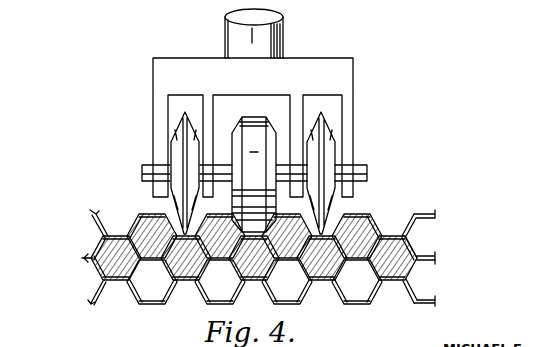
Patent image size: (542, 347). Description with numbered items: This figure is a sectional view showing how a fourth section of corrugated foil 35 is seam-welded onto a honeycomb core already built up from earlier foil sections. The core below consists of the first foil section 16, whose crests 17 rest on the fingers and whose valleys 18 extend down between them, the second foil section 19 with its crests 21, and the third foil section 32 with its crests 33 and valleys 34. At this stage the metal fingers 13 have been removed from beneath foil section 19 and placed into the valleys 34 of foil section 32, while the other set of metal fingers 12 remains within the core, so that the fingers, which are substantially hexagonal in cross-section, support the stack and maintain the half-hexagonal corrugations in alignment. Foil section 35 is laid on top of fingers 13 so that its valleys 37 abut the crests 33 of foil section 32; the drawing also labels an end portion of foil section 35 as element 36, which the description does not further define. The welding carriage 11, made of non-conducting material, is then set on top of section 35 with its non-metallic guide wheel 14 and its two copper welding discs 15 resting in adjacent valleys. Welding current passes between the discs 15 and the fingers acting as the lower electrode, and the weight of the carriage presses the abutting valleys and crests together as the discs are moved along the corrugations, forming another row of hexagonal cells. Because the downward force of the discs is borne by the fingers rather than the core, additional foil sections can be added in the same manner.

The carriage 11 is at (348, 76).
The metal fingers 12 is at (118, 248).
The metal fingers 13 is at (153, 232).
The guide wheel 14 is at (265, 132).
The welding discs 15 is at (172, 204).
The first foil section 16 is at (407, 289).
The crests 17 is at (118, 283).
The valleys 18 is at (431, 305).
The second foil section 19 is at (98, 270).
The crests 21 is at (429, 263).
The third foil section 32 is at (407, 242).
The crests 33 is at (328, 240).
The valleys 34 is at (430, 250).
The fourth foil section 35 is at (407, 233).
The strip end 36 is at (429, 210).
The valleys 37 is at (262, 234).